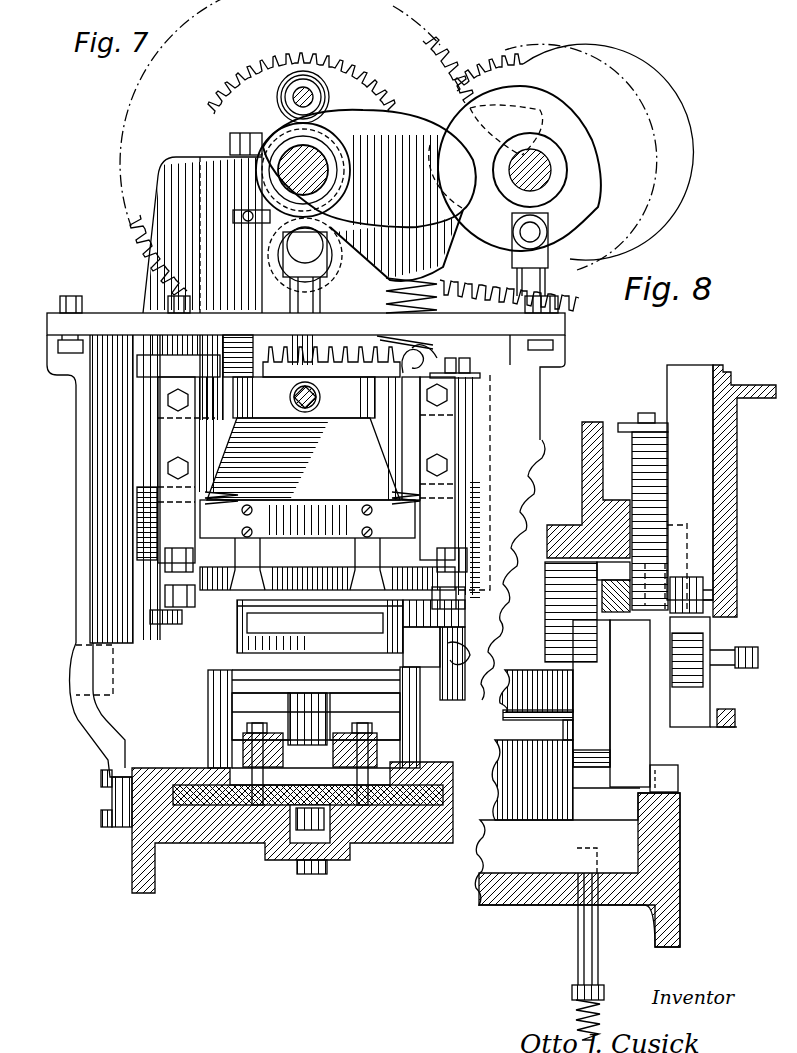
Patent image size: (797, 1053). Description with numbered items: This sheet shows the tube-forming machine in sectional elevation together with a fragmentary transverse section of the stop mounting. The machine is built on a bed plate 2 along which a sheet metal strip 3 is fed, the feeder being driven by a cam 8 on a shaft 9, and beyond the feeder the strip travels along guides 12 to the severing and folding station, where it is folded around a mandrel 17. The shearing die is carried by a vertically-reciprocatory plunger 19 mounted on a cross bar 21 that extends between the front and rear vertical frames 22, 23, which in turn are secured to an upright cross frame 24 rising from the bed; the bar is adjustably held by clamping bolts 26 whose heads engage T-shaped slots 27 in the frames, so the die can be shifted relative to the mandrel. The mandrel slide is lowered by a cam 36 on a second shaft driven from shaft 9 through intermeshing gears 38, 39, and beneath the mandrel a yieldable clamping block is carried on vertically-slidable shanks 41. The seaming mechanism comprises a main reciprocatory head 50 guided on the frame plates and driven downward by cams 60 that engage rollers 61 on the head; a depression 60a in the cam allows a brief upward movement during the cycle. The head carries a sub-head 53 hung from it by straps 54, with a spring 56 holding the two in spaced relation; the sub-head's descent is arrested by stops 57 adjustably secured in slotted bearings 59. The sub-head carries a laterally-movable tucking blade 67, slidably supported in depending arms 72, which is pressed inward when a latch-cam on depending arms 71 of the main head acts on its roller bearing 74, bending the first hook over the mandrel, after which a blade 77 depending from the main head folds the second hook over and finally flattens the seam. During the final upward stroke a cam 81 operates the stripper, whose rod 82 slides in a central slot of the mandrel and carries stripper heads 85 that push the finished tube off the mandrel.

In FIG. 7, the bed plate 2 is at (214, 840).
In FIG. 7, the sheet metal strip 3 is at (263, 752).
In FIG. 7, the cam 8 is at (403, 120).
In FIG. 7, the shaft 9 is at (290, 150).
In FIG. 7, the guides 12 is at (377, 745).
In FIG. 7, the mandrel 17 is at (237, 668).
In FIG. 8, the mandrel 17 is at (532, 745).
In FIG. 7, the plunger 19 is at (327, 290).
In FIG. 7, the cross bar 21 is at (480, 310).
In FIG. 7, the front vertical frame 22 is at (540, 388).
In FIG. 8, the front vertical frame 22 is at (716, 524).
In FIG. 7, the rear vertical frame 23 is at (76, 440).
In FIG. 7, the upright cross frame 24 is at (85, 732).
In FIG. 7, the clamping bolts 26 is at (70, 297).
In FIG. 7, the T-shaped slots 27 is at (57, 347).
In FIG. 7, the cam 36 is at (553, 100).
In FIG. 7, the gear 38 is at (348, 63).
In FIG. 7, the gear 39 is at (628, 103).
In FIG. 8, the shanks 41 is at (592, 941).
In FIG. 7, the main reciprocatory head 50 is at (287, 377).
In FIG. 8, the main reciprocatory head 50 is at (570, 522).
In FIG. 7, the sub-head 53 is at (330, 500).
In FIG. 8, the sub-head 53 is at (603, 598).
In FIG. 8, the straps 54 is at (668, 469).
In FIG. 7, the spring 56 is at (240, 497).
In FIG. 8, the stops 57 is at (695, 690).
In FIG. 8, the slotted bearings 59 is at (734, 712).
In FIG. 7, the cams 60 is at (393, 237).
In FIG. 7, the depression 60a is at (548, 256).
In FIG. 7, the rollers 61 is at (267, 248).
In FIG. 7, the tucking blade 67 is at (297, 582).
In FIG. 8, the tucking blade 67 is at (604, 672).
In FIG. 7, the depending arms 71 is at (172, 443).
In FIG. 8, the depending arms 71 is at (548, 641).
In FIG. 7, the depending arms 72 is at (183, 597).
In FIG. 8, the depending arms 72 is at (640, 672).
In FIG. 7, the roller bearing 74 is at (177, 624).
In FIG. 7, the blade 77 is at (303, 459).
In FIG. 7, the cam 81 is at (523, 107).
In FIG. 7, the rod 82 is at (486, 649).
In FIG. 7, the stripper heads 85 is at (383, 623).